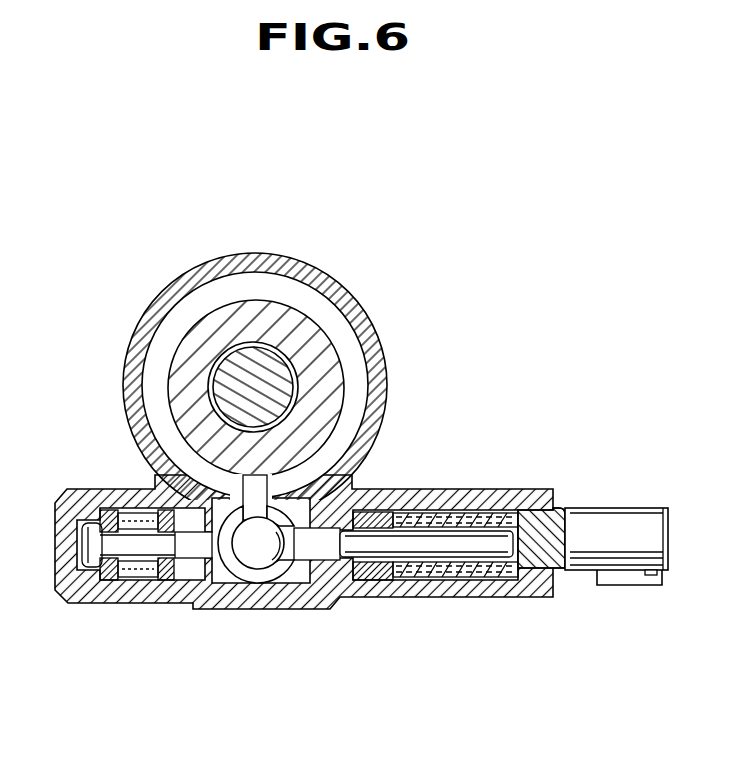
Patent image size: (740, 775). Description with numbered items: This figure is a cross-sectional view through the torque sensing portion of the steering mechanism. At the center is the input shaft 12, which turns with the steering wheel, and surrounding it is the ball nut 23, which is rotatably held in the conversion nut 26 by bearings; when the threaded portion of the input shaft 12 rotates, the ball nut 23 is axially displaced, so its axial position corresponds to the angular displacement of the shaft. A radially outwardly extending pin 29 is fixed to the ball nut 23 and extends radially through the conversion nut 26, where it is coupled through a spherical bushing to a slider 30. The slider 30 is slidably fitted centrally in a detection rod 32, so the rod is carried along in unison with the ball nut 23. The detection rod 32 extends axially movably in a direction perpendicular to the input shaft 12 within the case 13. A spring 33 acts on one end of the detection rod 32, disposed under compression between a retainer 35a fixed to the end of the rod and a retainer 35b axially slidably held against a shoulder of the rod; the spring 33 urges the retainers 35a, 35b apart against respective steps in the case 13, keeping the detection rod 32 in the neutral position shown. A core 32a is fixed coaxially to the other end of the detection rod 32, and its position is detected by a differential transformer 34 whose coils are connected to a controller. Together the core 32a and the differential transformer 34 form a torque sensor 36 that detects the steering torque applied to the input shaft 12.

The input shaft 12 is at (263, 372).
The case 13 is at (428, 489).
The ball nut 23 is at (323, 355).
The conversion nut 26 is at (157, 328).
The pin 29 is at (318, 566).
The slider 30 is at (262, 576).
The detection rod 32 is at (226, 570).
The core 32a is at (501, 513).
The spring 33 is at (117, 582).
The differential transformer 34 is at (500, 581).
The retainer 35a is at (100, 572).
The retainer 35b is at (166, 582).
The torque sensor 36 is at (435, 621).